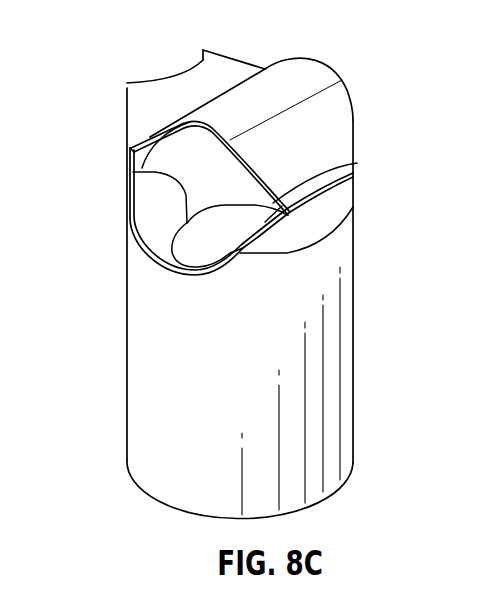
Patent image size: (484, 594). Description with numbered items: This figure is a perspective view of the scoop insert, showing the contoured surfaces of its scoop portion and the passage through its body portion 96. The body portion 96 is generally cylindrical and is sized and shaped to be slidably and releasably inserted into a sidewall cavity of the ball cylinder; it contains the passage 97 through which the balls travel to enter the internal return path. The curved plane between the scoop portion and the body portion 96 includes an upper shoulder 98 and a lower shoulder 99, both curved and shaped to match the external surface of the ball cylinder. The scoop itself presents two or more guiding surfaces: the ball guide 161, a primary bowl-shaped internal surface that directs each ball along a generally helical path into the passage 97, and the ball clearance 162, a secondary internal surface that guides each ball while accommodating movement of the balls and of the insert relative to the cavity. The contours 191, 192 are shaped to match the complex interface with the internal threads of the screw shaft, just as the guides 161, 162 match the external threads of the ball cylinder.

The body portion 96 is at (142, 403).
The passage 97 is at (345, 170).
The upper shoulder 98 is at (238, 65).
The lower shoulder 99 is at (318, 232).
The ball guide 161 is at (172, 157).
The ball clearance 162 is at (148, 217).
The contour 191 is at (312, 130).
The contour 192 is at (216, 105).